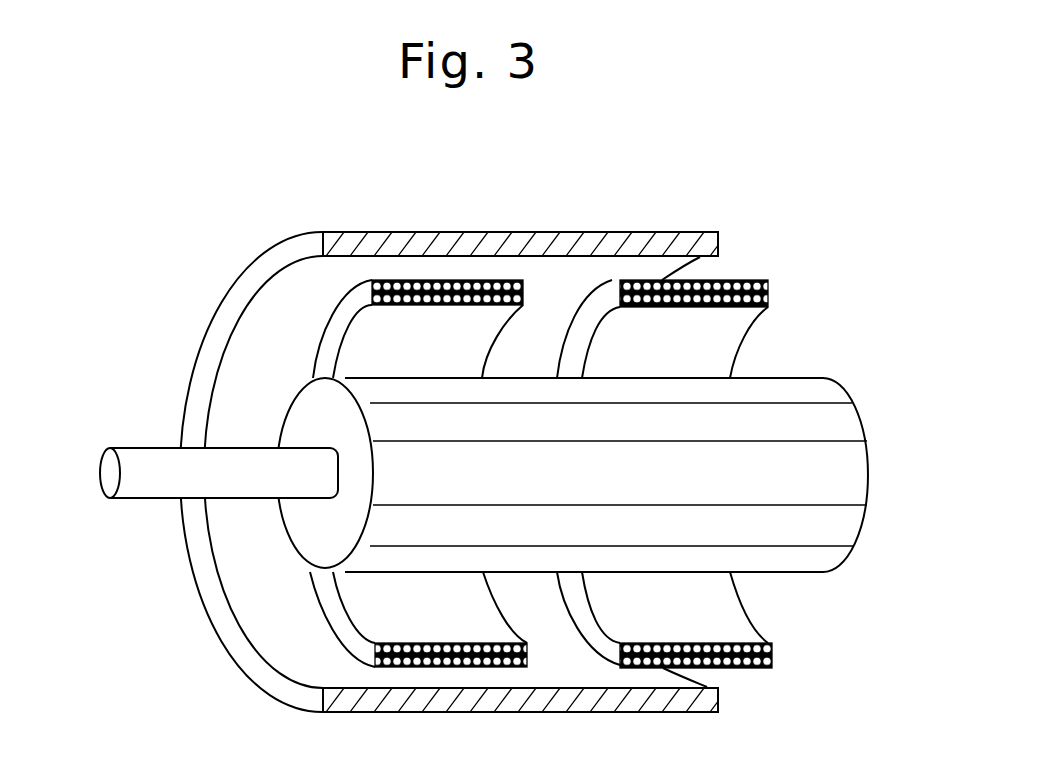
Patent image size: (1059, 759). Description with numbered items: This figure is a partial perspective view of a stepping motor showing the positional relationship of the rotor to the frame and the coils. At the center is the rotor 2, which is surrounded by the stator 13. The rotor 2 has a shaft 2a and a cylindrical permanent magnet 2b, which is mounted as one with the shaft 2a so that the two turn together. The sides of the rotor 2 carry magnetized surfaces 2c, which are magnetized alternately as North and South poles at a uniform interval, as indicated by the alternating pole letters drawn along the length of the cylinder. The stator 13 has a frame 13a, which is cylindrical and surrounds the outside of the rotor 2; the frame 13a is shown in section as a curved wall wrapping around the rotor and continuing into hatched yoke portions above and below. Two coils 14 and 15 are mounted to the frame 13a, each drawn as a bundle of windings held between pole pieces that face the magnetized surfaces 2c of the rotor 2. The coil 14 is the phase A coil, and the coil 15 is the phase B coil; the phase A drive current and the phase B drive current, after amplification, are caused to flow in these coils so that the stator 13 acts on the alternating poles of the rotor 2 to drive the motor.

The rotor 2 is at (490, 465).
The shaft 2a is at (146, 467).
The cylindrical permanent magnet 2b is at (297, 533).
The magnetized surfaces 2c is at (795, 422).
The stator 13 is at (183, 596).
The frame 13a is at (221, 320).
The phase A coil 14 is at (358, 358).
The phase B coil 15 is at (607, 362).
The phase A is at (448, 280).
The phase B is at (760, 280).